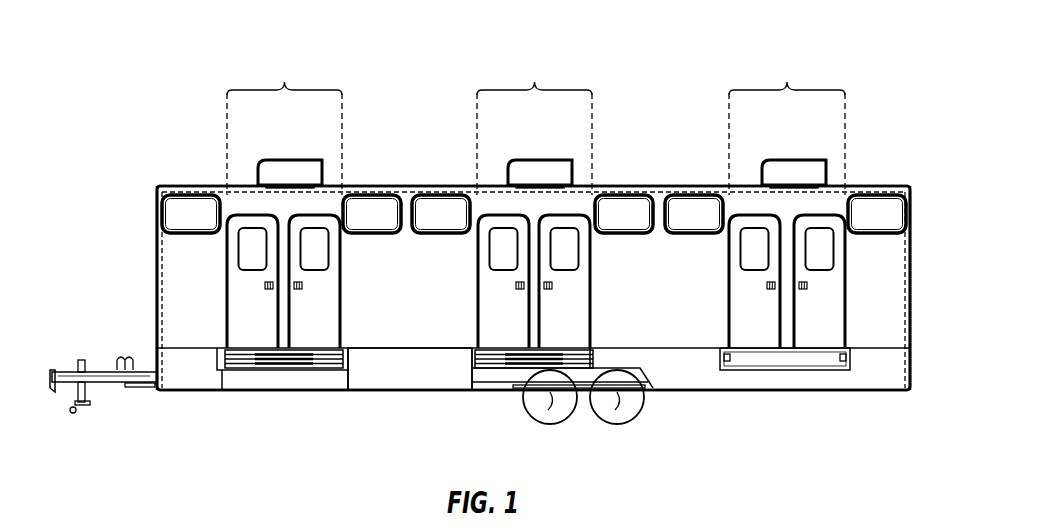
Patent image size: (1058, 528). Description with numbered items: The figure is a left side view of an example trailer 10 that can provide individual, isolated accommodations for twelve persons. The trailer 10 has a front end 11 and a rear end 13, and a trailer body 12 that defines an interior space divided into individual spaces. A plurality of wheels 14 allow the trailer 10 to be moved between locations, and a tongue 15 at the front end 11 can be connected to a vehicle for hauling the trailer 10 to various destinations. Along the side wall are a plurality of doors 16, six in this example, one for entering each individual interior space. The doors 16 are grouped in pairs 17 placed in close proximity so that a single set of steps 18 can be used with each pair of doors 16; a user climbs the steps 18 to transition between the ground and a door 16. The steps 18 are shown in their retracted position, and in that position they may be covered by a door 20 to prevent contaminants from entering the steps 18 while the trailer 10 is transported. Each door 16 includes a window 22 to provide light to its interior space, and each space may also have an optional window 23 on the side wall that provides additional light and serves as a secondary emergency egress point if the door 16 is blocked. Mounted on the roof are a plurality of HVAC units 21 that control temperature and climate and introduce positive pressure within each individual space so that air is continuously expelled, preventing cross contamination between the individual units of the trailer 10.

The trailer 10 is at (132, 126).
The front end 11 is at (126, 288).
The trailer body 12 is at (427, 336).
The rear end 13 is at (922, 280).
The wheels 14 is at (608, 418).
The tongue 15 is at (100, 372).
The doors 16 is at (267, 336).
The pairs of doors 17 is at (284, 82).
The steps 18 is at (458, 360).
The door 20 is at (295, 382).
The HVAC units 21 is at (297, 158).
The windows 22 is at (246, 250).
The window 23 is at (173, 196).